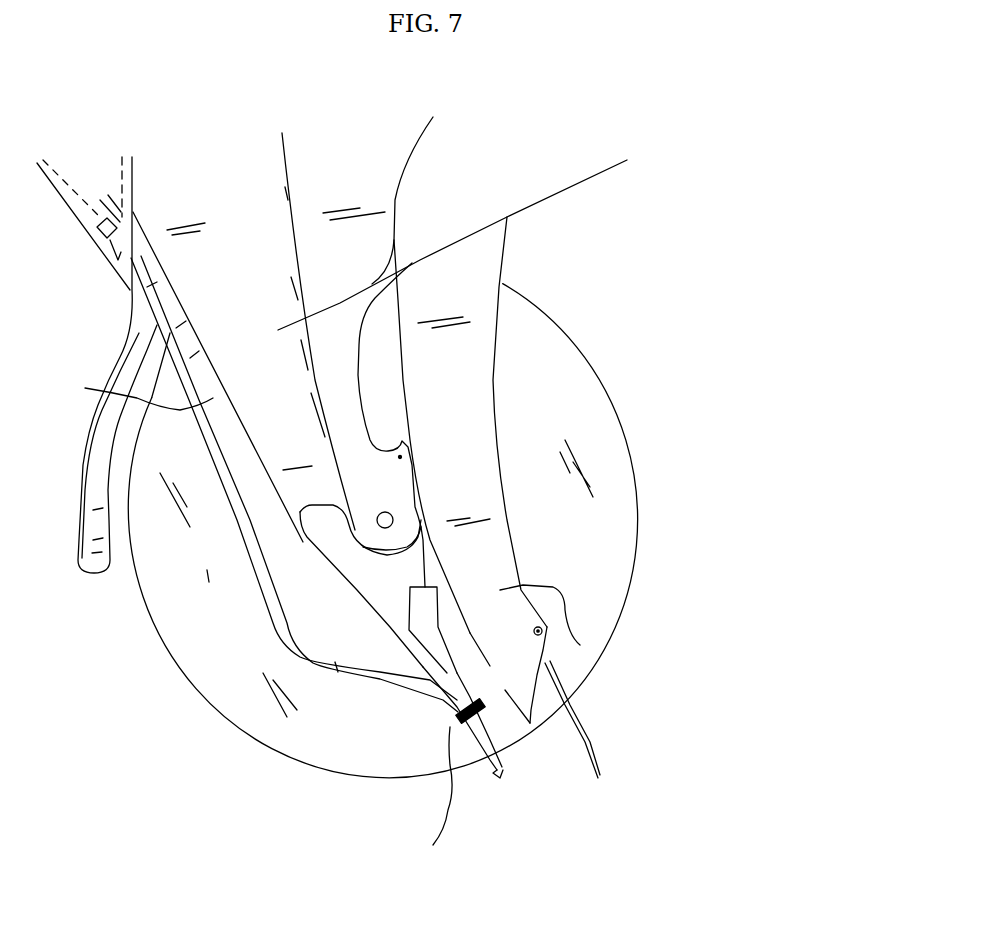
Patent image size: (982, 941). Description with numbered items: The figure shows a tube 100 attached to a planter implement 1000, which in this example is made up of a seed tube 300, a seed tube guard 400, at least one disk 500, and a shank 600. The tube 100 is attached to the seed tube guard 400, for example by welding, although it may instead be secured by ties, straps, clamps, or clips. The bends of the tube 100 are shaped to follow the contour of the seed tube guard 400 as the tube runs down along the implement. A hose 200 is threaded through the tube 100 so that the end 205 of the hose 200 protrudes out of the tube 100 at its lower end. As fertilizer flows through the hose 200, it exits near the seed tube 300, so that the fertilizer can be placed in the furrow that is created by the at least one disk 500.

The tube 100 is at (274, 627).
The hose 200 is at (143, 257).
The end of the hose 205 is at (502, 775).
The seed tube 300 is at (580, 645).
The seed tube guard 400 is at (503, 746).
The disk 500 is at (540, 353).
The shank 600 is at (452, 382).
The planter implement 1000 is at (692, 207).